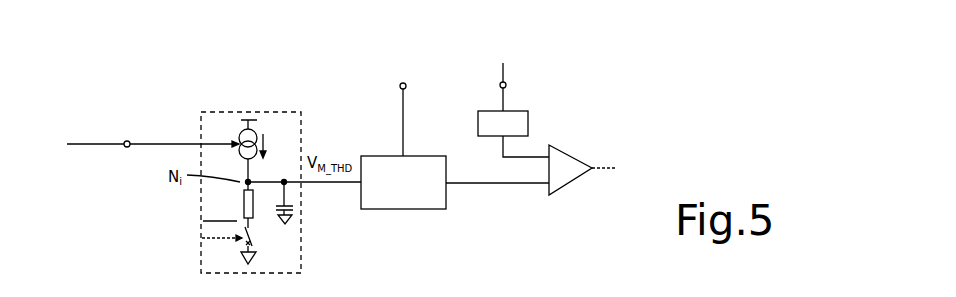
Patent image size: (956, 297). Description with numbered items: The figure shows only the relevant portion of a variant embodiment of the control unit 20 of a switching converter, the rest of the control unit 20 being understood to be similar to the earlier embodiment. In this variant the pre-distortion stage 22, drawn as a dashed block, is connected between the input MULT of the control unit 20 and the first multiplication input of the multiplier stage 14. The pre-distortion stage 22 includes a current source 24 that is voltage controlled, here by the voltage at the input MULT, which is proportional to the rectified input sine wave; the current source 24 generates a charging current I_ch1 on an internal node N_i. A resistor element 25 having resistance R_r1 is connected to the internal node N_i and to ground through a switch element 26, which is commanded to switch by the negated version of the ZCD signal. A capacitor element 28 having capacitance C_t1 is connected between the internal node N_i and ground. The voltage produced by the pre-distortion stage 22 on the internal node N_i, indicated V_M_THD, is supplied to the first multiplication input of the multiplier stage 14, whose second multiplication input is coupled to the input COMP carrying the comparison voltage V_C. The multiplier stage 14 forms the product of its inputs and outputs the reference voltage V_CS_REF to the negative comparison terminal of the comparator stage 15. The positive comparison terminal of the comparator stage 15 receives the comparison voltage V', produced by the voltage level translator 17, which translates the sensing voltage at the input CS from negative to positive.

The control unit 20 is at (136, 91).
The pre-distortion stage 22 is at (305, 110).
The current source 24 is at (240, 137).
The resistor element 25 is at (244, 198).
The switch element 26 is at (250, 233).
The capacitor element 28 is at (294, 212).
The multiplier stage 14 is at (414, 210).
The comparator stage 15 is at (575, 160).
The voltage level translator 17 is at (528, 113).